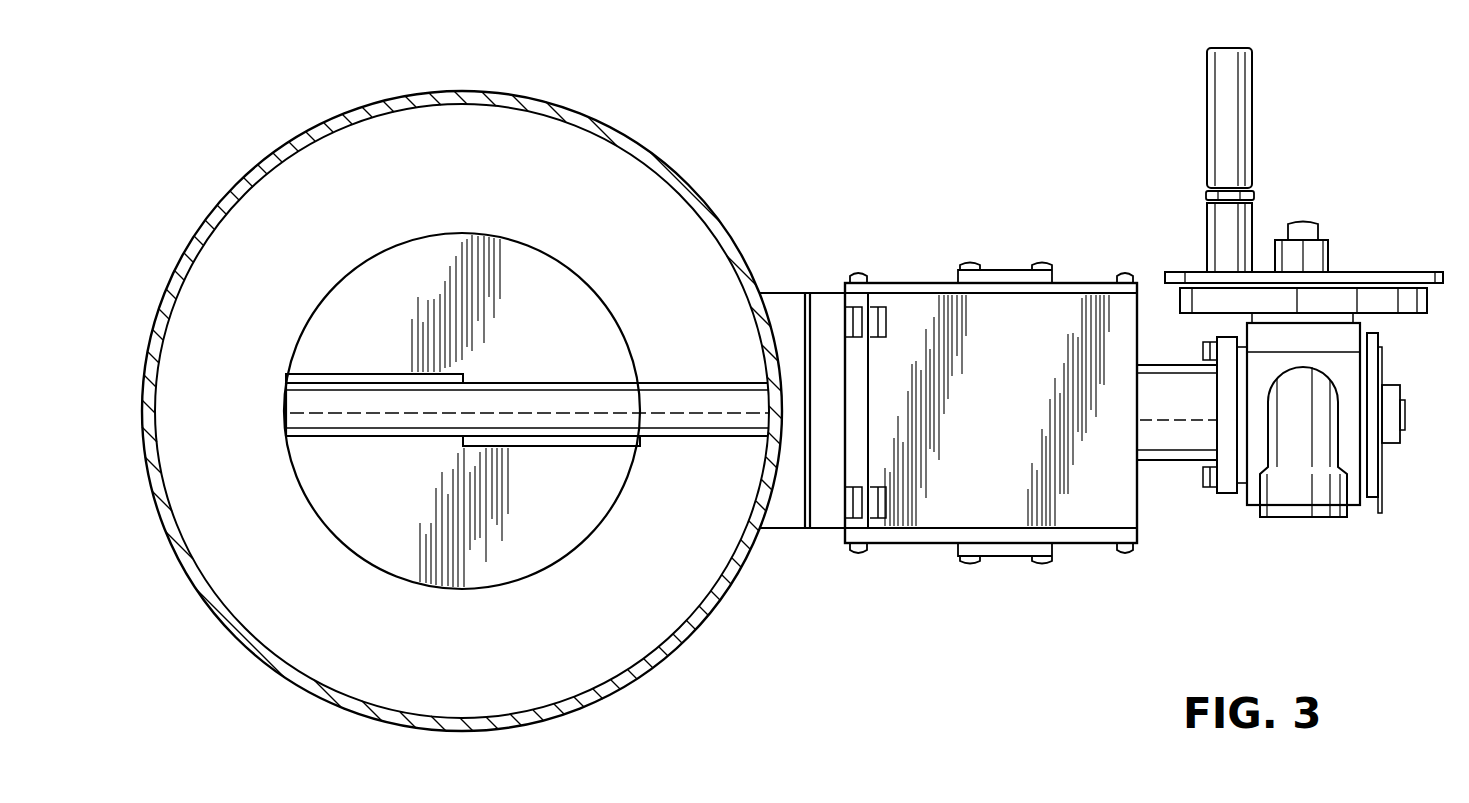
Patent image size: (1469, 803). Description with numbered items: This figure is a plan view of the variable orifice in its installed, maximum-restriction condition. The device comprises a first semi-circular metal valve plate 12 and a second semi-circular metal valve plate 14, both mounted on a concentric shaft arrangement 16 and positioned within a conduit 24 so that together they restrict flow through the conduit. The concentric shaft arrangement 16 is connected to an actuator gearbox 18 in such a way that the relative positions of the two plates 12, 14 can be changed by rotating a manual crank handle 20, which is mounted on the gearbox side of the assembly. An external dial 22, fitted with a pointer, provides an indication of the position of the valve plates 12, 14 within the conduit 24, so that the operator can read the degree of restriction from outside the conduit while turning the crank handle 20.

The first semi-circular metal valve plate 12 is at (458, 232).
The second semi-circular metal valve plate 14 is at (467, 590).
The concentric shaft arrangement 16 is at (733, 382).
The actuator gearbox 18 is at (1088, 283).
The manual crank handle 20 is at (1253, 107).
The external dial 22 is at (1380, 493).
The conduit 24 is at (663, 162).